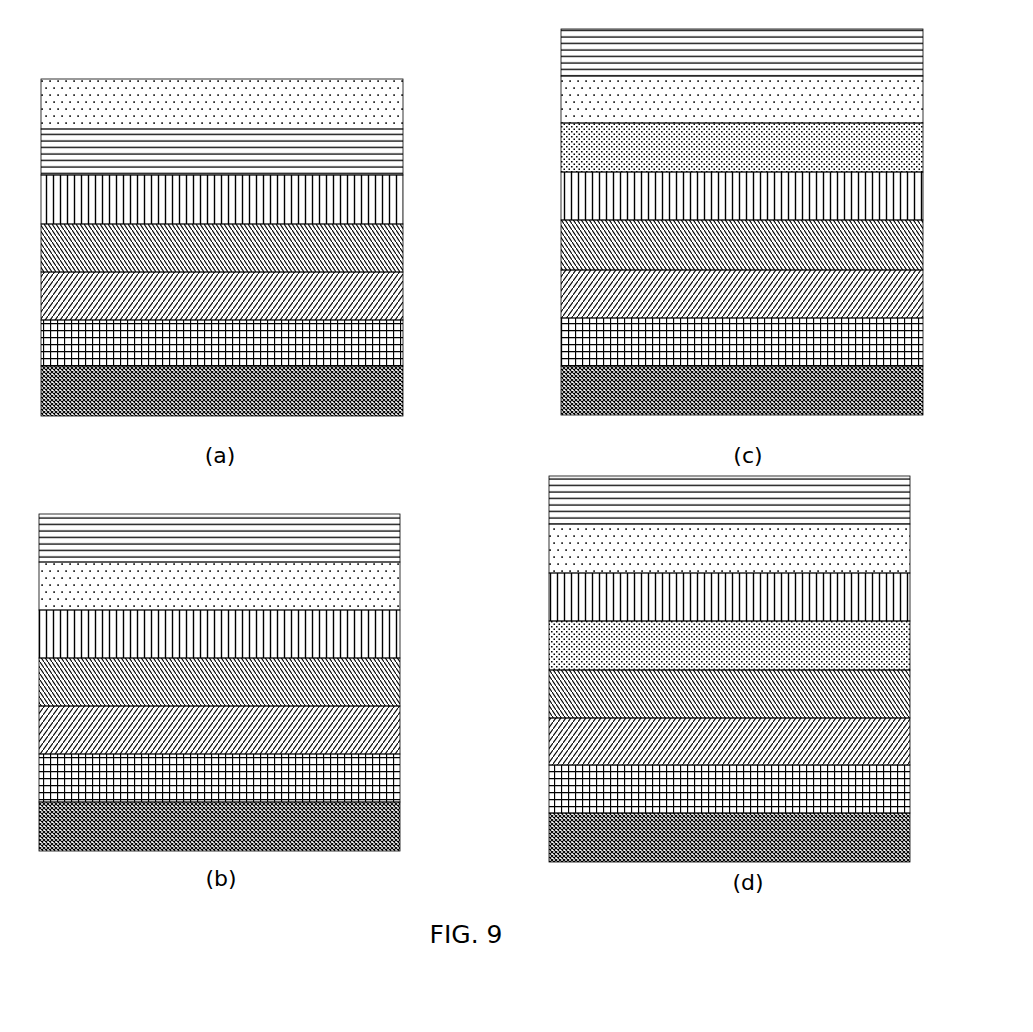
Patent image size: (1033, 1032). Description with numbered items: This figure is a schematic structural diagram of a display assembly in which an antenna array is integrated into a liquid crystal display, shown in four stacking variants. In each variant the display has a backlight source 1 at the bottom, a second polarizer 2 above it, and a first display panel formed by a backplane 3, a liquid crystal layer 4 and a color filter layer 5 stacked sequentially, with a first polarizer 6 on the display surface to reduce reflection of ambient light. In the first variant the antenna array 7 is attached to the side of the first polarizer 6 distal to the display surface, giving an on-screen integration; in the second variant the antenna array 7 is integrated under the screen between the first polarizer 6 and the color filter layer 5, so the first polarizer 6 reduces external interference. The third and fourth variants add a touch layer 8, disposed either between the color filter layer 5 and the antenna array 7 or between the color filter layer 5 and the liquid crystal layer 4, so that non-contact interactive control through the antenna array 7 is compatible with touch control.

The backlight source 1 is at (396, 385).
The second polarizer 2 is at (396, 337).
The backplane 3 is at (396, 289).
The liquid crystal layer 4 is at (396, 241).
The color filter layer 5 is at (396, 192).
The first polarizer 6 is at (396, 145).
The antenna array 7 is at (396, 97).
The touch layer 8 is at (916, 141).